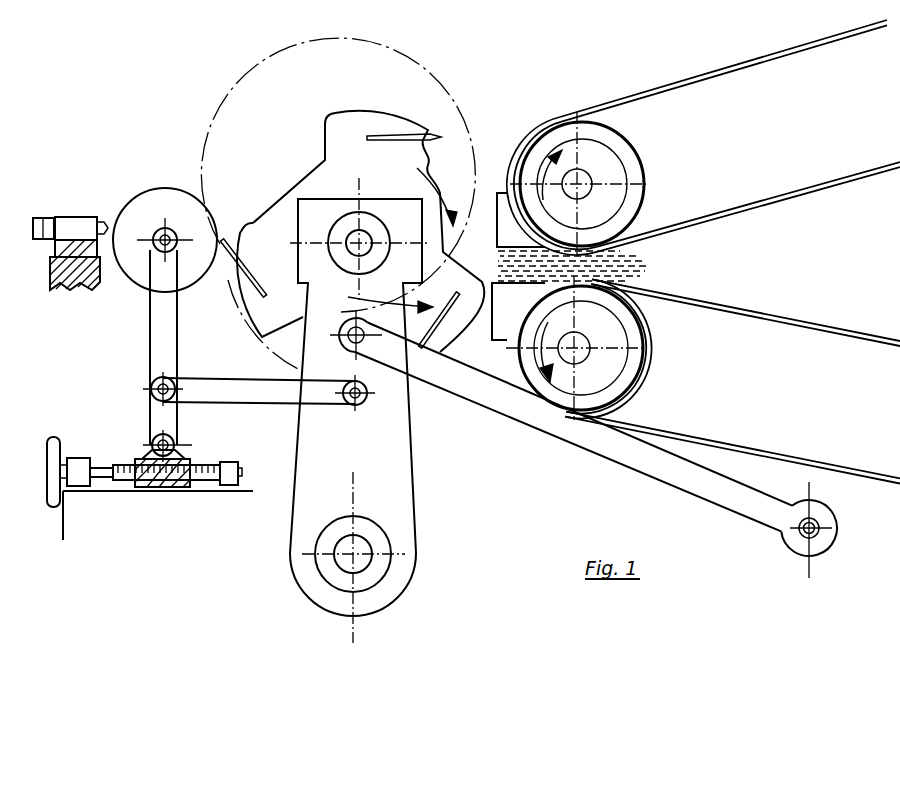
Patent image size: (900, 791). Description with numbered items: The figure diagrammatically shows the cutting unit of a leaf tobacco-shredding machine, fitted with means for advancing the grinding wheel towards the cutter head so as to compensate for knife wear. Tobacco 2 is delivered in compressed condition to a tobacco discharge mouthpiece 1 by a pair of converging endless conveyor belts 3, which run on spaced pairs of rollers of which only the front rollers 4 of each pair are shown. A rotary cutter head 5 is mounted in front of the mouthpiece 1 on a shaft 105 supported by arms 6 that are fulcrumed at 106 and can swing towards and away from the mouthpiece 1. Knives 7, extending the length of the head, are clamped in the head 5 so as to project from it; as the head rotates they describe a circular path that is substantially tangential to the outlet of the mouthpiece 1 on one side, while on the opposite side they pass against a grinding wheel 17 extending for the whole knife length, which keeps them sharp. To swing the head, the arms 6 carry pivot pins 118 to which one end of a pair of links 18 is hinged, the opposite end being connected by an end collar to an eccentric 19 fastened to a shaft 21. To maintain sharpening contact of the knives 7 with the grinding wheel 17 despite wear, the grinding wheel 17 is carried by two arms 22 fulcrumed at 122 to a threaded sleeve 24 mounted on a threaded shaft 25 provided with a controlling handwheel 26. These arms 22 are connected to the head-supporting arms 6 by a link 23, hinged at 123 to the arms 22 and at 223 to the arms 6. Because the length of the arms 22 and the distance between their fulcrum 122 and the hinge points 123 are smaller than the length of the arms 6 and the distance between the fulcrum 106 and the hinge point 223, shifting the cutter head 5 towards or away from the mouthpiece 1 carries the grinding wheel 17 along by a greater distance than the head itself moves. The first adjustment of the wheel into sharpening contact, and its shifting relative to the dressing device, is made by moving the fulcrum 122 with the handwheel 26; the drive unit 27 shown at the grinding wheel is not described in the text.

The tobacco discharge mouthpiece 1 is at (500, 240).
The tobacco 2 is at (642, 257).
The converging endless conveyor belts 3 is at (782, 197).
The front rollers 4 is at (636, 164).
The rotary cutter head 5 is at (350, 128).
The arms 6 is at (408, 465).
The knives 7 is at (402, 136).
The grinding wheel 17 is at (172, 196).
The links 18 is at (580, 418).
The eccentric 19 is at (803, 537).
The shaft 21 is at (817, 525).
The arms 22 is at (150, 330).
The link 23 is at (243, 399).
The threaded sleeve 24 is at (165, 492).
The threaded shaft 25 is at (122, 482).
The handwheel 26 is at (45, 495).
The drive motor 27 is at (73, 222).
The shaft 105 is at (360, 240).
The fulcrum 106 is at (340, 562).
The pivot pins 118 is at (344, 329).
The fulcrum 122 is at (152, 443).
The hinge points 123 is at (150, 387).
The hinge point 223 is at (357, 406).